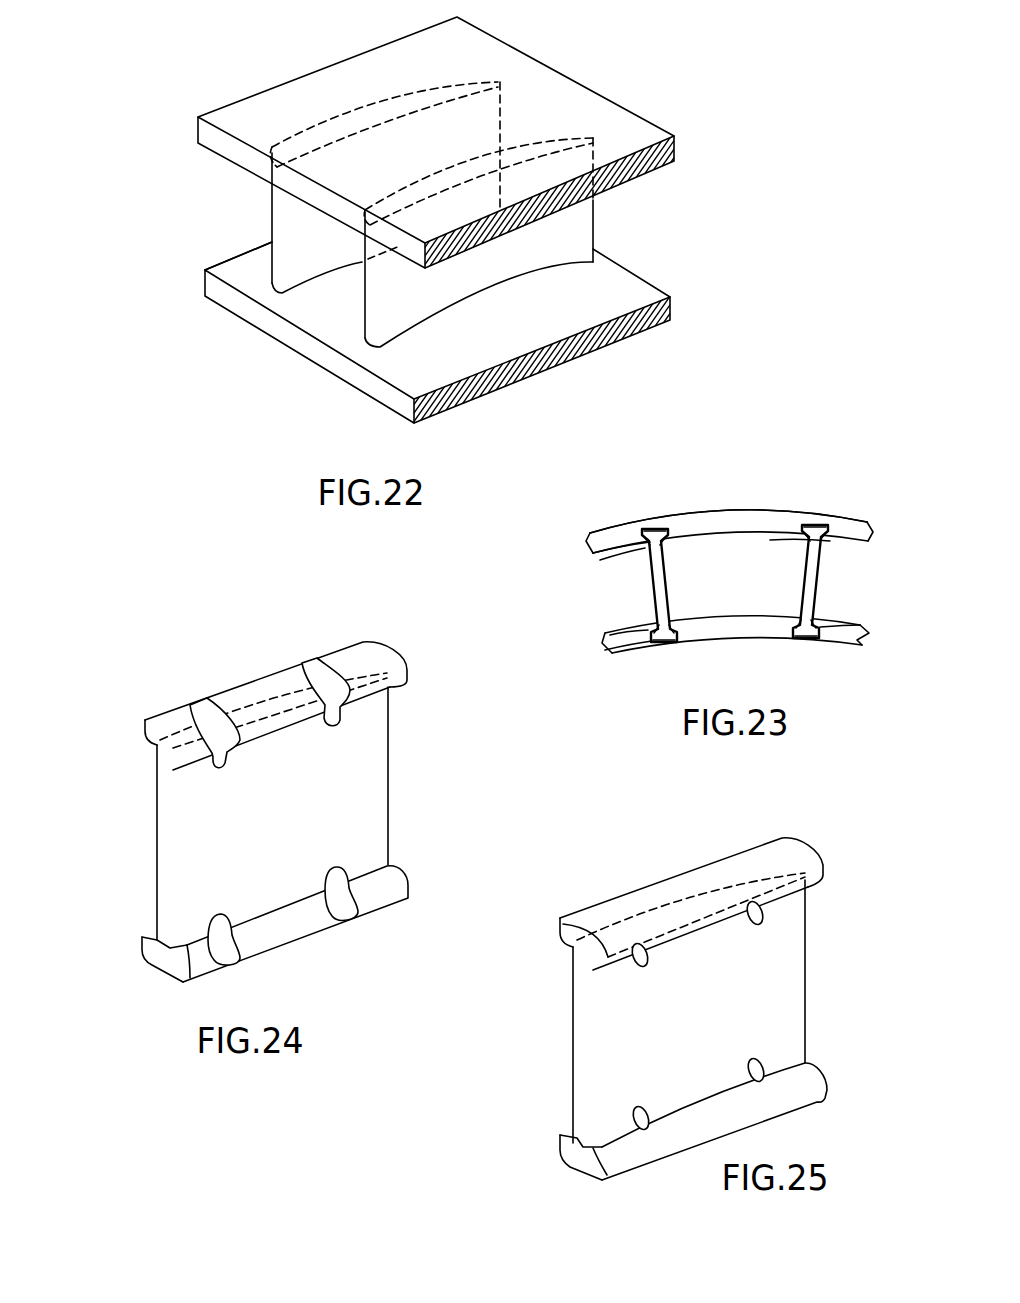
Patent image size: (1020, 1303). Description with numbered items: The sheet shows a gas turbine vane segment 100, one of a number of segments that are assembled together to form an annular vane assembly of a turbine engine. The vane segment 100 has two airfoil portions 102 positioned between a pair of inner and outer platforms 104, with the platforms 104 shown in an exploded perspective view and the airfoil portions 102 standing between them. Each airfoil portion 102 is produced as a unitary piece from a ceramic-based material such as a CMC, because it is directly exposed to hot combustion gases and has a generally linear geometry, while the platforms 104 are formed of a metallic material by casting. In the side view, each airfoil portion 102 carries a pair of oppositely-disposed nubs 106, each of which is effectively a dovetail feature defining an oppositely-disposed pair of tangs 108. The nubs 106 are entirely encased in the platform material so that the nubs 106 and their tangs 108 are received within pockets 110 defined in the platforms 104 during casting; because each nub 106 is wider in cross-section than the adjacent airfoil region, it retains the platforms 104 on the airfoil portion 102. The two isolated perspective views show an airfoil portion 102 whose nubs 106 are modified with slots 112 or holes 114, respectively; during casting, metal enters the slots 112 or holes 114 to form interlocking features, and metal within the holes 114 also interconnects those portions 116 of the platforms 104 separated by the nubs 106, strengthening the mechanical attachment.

In FIG. 22, the gas turbine vane segment 100 is at (716, 112).
In FIG. 23, the gas turbine vane segment 100 is at (552, 582).
In FIG. 22, the airfoil portion 102 is at (274, 226).
In FIG. 23, the airfoil portion 102 is at (664, 579).
In FIG. 24, the airfoil portion 102 is at (148, 818).
In FIG. 25, the airfoil portion 102 is at (566, 1019).
In FIG. 22, the platform 104 is at (645, 165).
In FIG. 23, the platform 104 is at (858, 542).
In FIG. 23, the nub 106 is at (658, 535).
In FIG. 24, the nub 106 is at (147, 728).
In FIG. 25, the nub 106 is at (565, 925).
In FIG. 23, the tang 108 is at (643, 533).
In FIG. 24, the tang 108 is at (407, 678).
In FIG. 25, the tang 108 is at (823, 872).
In FIG. 23, the pocket 110 is at (653, 528).
In FIG. 24, the slot 112 is at (187, 705).
In FIG. 25, the hole 114 is at (645, 967).
In FIG. 23, the portion of platform 116 is at (645, 546).